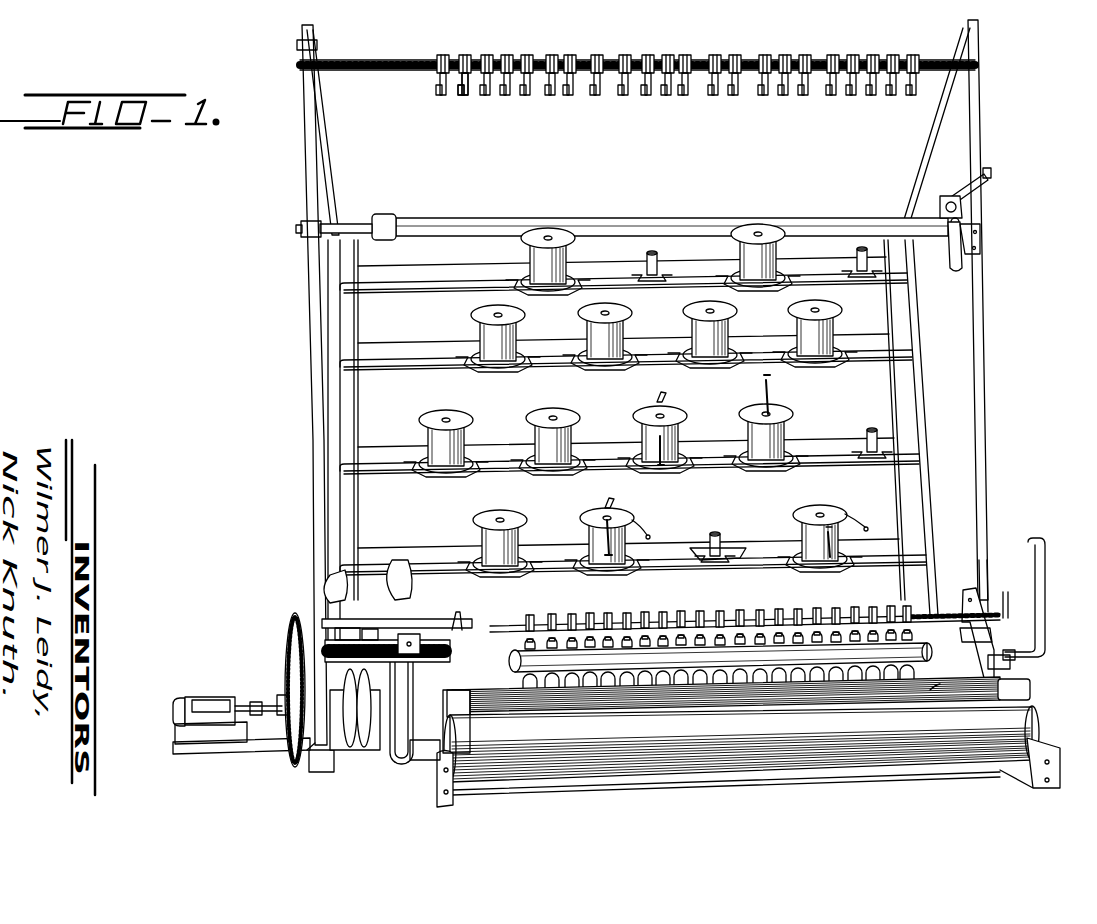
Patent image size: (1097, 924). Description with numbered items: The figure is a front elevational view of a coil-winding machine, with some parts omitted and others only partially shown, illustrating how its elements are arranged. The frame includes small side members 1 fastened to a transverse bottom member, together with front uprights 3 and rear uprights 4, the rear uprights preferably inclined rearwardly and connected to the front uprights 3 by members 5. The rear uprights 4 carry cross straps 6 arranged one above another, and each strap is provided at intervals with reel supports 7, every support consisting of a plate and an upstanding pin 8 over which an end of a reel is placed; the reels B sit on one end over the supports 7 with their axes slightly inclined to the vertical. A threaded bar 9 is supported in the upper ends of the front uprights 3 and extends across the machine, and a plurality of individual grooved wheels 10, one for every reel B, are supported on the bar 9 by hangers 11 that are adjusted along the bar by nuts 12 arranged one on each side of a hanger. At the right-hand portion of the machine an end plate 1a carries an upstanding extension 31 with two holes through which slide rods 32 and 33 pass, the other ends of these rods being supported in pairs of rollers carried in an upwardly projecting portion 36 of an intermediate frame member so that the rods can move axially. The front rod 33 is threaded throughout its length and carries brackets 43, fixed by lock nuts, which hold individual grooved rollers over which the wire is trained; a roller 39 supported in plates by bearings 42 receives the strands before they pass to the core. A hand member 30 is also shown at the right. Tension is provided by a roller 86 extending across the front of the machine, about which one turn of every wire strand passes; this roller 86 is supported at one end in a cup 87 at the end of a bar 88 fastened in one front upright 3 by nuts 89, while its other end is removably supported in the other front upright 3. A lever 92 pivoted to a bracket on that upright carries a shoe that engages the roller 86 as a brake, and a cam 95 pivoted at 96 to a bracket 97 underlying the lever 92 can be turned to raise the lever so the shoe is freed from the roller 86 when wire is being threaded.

The side members 1 is at (306, 748).
The end plate 1a is at (1010, 668).
The front uprights 3 is at (308, 172).
The rear uprights 4 is at (345, 405).
The connecting members 5 is at (326, 160).
The cross straps 6 is at (424, 280).
The reel supports 7 is at (728, 566).
The upstanding pin 8 is at (724, 548).
The threaded bar 9 is at (396, 73).
The grooved wheels 10 is at (466, 90).
The hangers 11 is at (461, 78).
The nuts 12 is at (453, 55).
The hand lever 30 is at (1046, 600).
The upstanding extension 31 is at (972, 590).
The slide rod 32 is at (1000, 600).
The front rod 33 is at (1024, 606).
The upwardly projecting portion 36 is at (457, 612).
The roller 39 is at (675, 672).
The bearings 42 is at (512, 672).
The brackets 43 is at (578, 668).
The roller 86 is at (665, 218).
The cup 87 is at (388, 215).
The bar 88 is at (348, 223).
The nuts 89 is at (310, 248).
The lever 92 is at (990, 172).
The cam 95 is at (962, 208).
The pivot 96 is at (960, 224).
The bracket 97 is at (978, 240).
The reels B is at (472, 438).